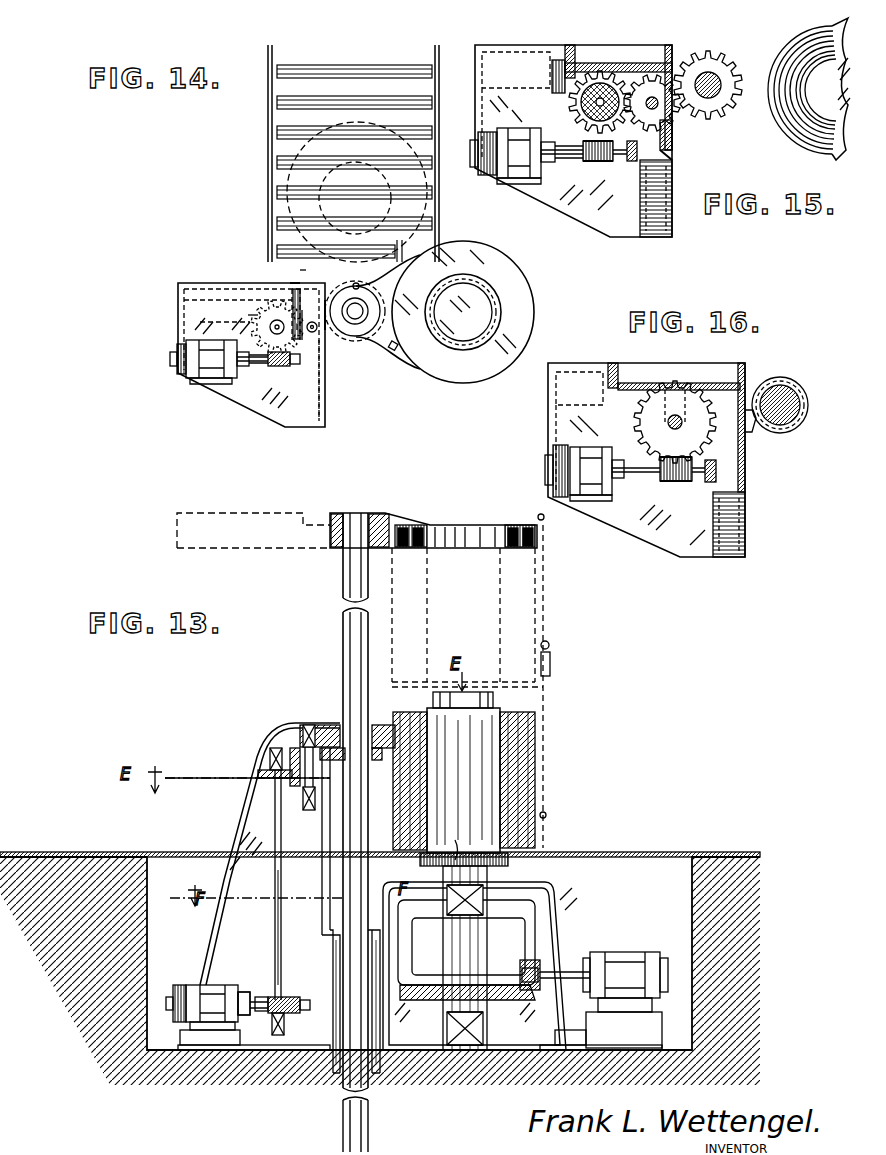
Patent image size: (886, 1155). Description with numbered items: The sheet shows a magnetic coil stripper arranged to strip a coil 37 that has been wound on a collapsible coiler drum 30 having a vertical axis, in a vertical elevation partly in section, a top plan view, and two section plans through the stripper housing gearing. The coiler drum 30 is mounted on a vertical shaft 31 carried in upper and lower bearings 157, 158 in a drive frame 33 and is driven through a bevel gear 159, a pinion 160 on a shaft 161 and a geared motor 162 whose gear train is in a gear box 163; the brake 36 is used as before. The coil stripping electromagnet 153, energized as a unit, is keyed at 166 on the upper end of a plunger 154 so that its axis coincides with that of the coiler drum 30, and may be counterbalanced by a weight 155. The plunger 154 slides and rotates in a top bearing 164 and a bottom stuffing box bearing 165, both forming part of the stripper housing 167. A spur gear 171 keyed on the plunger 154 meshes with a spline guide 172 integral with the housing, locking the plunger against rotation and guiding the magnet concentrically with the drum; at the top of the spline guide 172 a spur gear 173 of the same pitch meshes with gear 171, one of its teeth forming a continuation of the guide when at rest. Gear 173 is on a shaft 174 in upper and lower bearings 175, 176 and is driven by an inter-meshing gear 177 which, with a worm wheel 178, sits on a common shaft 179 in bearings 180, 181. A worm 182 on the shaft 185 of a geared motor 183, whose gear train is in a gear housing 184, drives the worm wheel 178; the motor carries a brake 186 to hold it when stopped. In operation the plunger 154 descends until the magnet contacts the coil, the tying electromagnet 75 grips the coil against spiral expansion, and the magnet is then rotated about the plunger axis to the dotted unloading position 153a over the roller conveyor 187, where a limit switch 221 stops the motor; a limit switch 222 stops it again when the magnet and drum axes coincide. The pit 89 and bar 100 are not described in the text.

In FIG. 14, the collapsible coiler drum 30 is at (474, 344).
In FIG. 15, the collapsible coiler drum 30 is at (832, 150).
In FIG. 13, the collapsible coiler drum 30 is at (505, 706).
In FIG. 13, the vertical shaft 31 is at (443, 940).
In FIG. 13, the drive frame 33 is at (552, 884).
In FIG. 13, the brake 36 is at (447, 840).
In FIG. 15, the coil 37 is at (800, 138).
In FIG. 13, the coil 37 is at (530, 602).
In FIG. 13, the tying electromagnet 75 is at (552, 662).
In FIG. 13, the pit 89 is at (148, 928).
In FIG. 14, the bar 100 is at (292, 284).
In FIG. 14, the coil stripping electromagnet 153 is at (522, 272).
In FIG. 13, the coil stripping electromagnet 153 is at (518, 522).
In FIG. 14, the unloading position of magnet 153a is at (300, 213).
In FIG. 14, the plunger 154 is at (352, 337).
In FIG. 15, the plunger 154 is at (718, 100).
In FIG. 16, the plunger 154 is at (792, 390).
In FIG. 13, the plunger 154 is at (343, 637).
In FIG. 13, the weight 155 is at (240, 550).
In FIG. 13, the upper bearing 157 is at (470, 905).
In FIG. 13, the lower bearing 158 is at (484, 1045).
In FIG. 13, the bevel gear 159 is at (520, 963).
In FIG. 13, the pinion 160 is at (523, 963).
In FIG. 13, the shaft 161 is at (566, 968).
In FIG. 13, the geared motor 162 is at (632, 952).
In FIG. 13, the gear box 163 is at (610, 952).
In FIG. 13, the top bearing 164 is at (378, 724).
In FIG. 13, the stuffing box bearing 165 is at (420, 866).
In FIG. 14, the key 166 is at (372, 270).
In FIG. 14, the stripper housing 167 is at (236, 300).
In FIG. 15, the stripper housing 167 is at (518, 64).
In FIG. 16, the stripper housing 167 is at (585, 380).
In FIG. 13, the stripper housing 167 is at (242, 803).
In FIG. 15, the spur gear 171 is at (722, 60).
In FIG. 13, the spur gear 171 is at (410, 708).
In FIG. 14, the spline guide 172 is at (330, 345).
In FIG. 16, the spline guide 172 is at (754, 430).
In FIG. 13, the spline guide 172 is at (352, 846).
In FIG. 14, the spur gear 173 is at (312, 333).
In FIG. 15, the spur gear 173 is at (670, 150).
In FIG. 13, the spur gear 173 is at (300, 729).
In FIG. 14, the shaft 174 is at (326, 396).
In FIG. 15, the shaft 174 is at (672, 126).
In FIG. 13, the shaft 174 is at (330, 748).
In FIG. 13, the upper bearing 175 is at (302, 727).
In FIG. 13, the lower bearing 176 is at (306, 812).
In FIG. 14, the inter-meshing gear 177 is at (298, 344).
In FIG. 15, the inter-meshing gear 177 is at (628, 62).
In FIG. 13, the inter-meshing gear 177 is at (270, 790).
In FIG. 14, the worm wheel 178 is at (240, 329).
In FIG. 15, the worm wheel 178 is at (548, 82).
In FIG. 16, the worm wheel 178 is at (660, 384).
In FIG. 13, the worm wheel 178 is at (258, 997).
In FIG. 14, the common shaft 179 is at (266, 318).
In FIG. 15, the common shaft 179 is at (626, 72).
In FIG. 16, the common shaft 179 is at (682, 402).
In FIG. 13, the common shaft 179 is at (290, 908).
In FIG. 14, the upper bearing 180 is at (172, 346).
In FIG. 13, the upper bearing 180 is at (268, 756).
In FIG. 15, the lower bearing 181 is at (583, 56).
In FIG. 16, the lower bearing 181 is at (740, 366).
In FIG. 13, the lower bearing 181 is at (286, 1021).
In FIG. 14, the worm 182 is at (284, 367).
In FIG. 15, the worm 182 is at (606, 164).
In FIG. 16, the worm 182 is at (676, 482).
In FIG. 13, the worm 182 is at (284, 997).
In FIG. 14, the geared motor 183 is at (206, 386).
In FIG. 15, the geared motor 183 is at (514, 186).
In FIG. 16, the geared motor 183 is at (598, 501).
In FIG. 13, the geared motor 183 is at (188, 985).
In FIG. 14, the gear housing 184 is at (240, 368).
In FIG. 15, the gear housing 184 is at (552, 140).
In FIG. 16, the gear housing 184 is at (654, 470).
In FIG. 13, the gear housing 184 is at (240, 992).
In FIG. 14, the shaft 185 is at (258, 362).
In FIG. 15, the shaft 185 is at (578, 158).
In FIG. 13, the shaft 185 is at (240, 1028).
In FIG. 14, the brake 186 is at (186, 376).
In FIG. 15, the brake 186 is at (486, 172).
In FIG. 16, the brake 186 is at (560, 452).
In FIG. 13, the brake 186 is at (185, 995).
In FIG. 14, the roller conveyor 187 is at (290, 114).
In FIG. 14, the limit switch 221 is at (272, 266).
In FIG. 14, the limit switch 222 is at (396, 352).